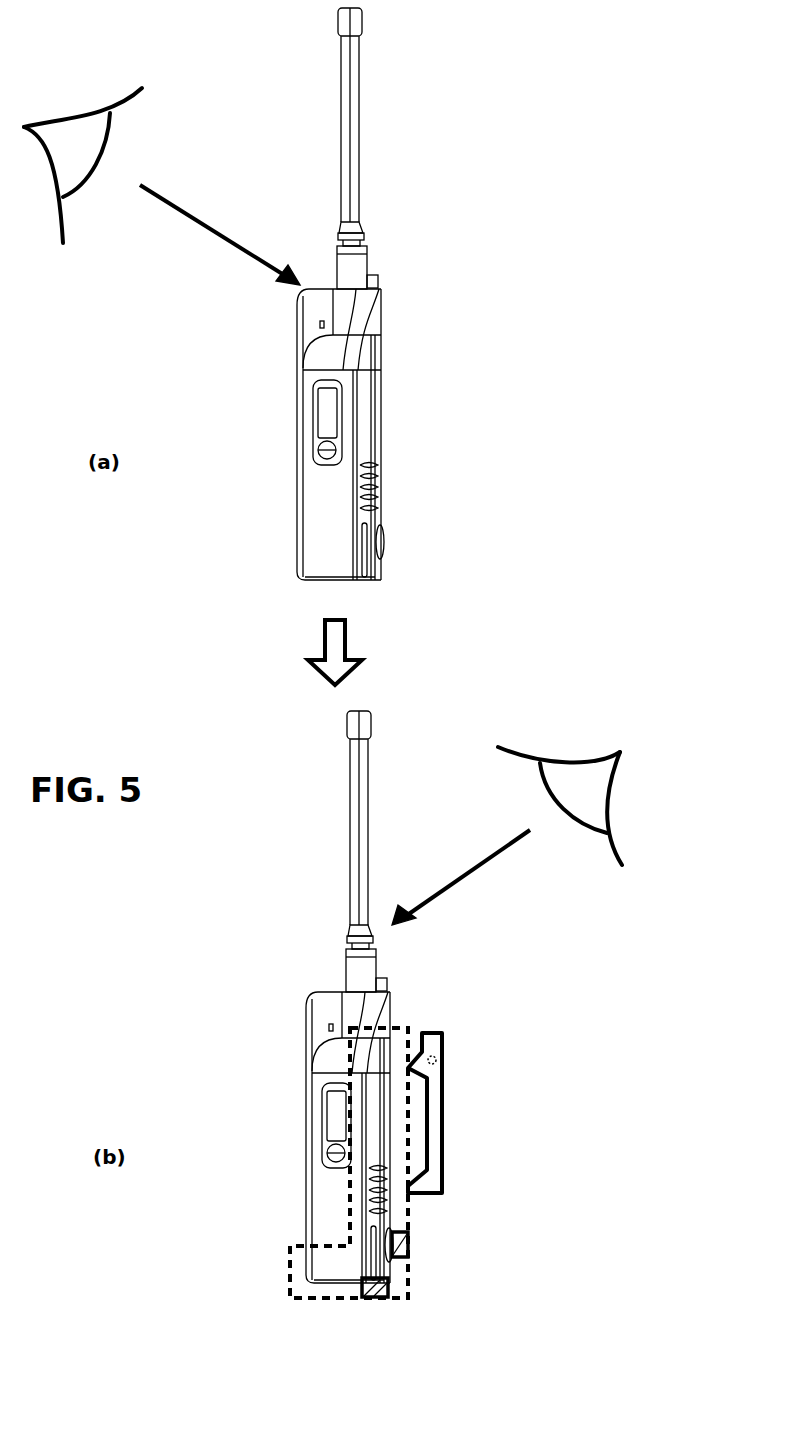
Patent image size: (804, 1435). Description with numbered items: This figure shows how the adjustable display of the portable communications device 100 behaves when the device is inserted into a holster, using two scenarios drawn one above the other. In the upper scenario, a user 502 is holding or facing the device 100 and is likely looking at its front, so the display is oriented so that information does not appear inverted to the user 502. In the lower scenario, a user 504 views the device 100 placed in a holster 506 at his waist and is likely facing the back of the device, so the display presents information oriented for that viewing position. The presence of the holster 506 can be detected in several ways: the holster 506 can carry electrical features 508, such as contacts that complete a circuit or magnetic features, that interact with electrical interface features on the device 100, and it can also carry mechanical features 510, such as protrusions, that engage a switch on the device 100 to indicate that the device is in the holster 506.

The portable communications device 100 is at (333, 313).
The user 502 is at (73, 110).
The user 504 is at (583, 772).
The holster 506 is at (408, 1027).
The electrical features 508 is at (408, 1240).
The mechanical features 510 is at (378, 1298).